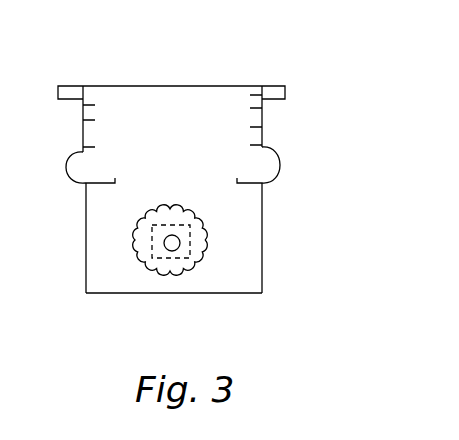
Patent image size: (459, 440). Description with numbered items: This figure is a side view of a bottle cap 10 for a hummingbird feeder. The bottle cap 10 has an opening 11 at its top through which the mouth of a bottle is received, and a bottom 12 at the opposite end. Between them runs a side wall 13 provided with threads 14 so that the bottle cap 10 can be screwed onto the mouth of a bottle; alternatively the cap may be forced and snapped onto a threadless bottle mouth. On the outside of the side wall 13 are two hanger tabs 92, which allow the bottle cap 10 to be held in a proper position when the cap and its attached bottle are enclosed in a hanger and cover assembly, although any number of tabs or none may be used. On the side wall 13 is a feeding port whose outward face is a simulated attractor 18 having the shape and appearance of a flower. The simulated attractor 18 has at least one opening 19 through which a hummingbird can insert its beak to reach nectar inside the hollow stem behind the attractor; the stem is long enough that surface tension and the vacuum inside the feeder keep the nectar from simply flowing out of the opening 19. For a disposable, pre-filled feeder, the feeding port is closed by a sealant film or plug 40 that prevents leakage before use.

The bottle cap 10 is at (318, 125).
The opening 11 is at (172, 86).
The bottom 12 is at (218, 293).
The side wall 13 is at (83, 135).
The threads 14 is at (262, 138).
The simulated attractor 18 is at (208, 222).
The opening 19 is at (170, 241).
The sealant film or plug 40 is at (170, 241).
The hanger tabs 92 is at (283, 85).